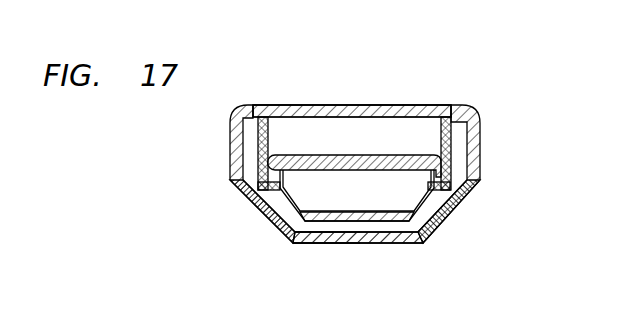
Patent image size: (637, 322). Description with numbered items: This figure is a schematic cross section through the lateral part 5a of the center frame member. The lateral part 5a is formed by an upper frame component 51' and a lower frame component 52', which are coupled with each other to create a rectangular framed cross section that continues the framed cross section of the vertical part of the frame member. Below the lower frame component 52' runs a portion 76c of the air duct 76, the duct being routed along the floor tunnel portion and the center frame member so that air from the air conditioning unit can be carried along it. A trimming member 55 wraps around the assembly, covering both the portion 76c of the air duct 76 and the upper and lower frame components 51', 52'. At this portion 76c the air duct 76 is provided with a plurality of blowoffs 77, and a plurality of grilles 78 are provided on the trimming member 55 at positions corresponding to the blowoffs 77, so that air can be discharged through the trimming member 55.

The trimming member 55 is at (481, 161).
The grilles 78 is at (263, 206).
The air duct 76 is at (369, 232).
The portion of the air duct 76c is at (317, 230).
The upper frame component 51' is at (359, 132).
The lateral part 5a is at (355, 104).
The lower frame component 52' is at (355, 125).
The blowoffs 77 is at (299, 210).